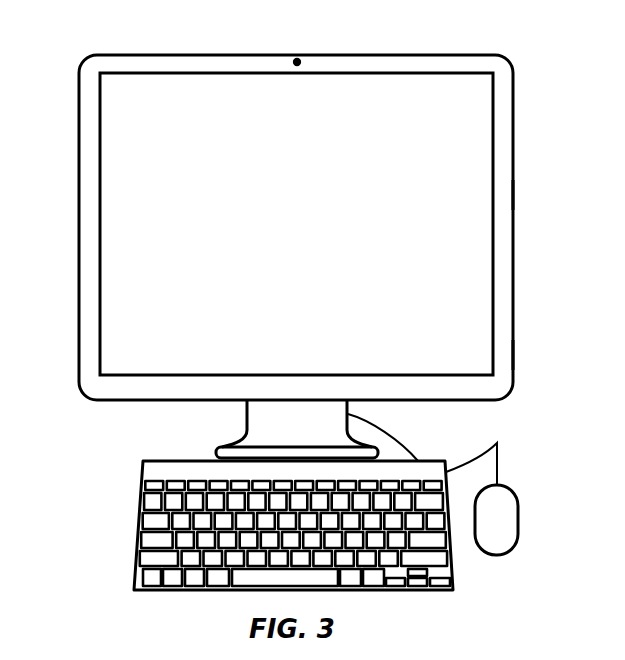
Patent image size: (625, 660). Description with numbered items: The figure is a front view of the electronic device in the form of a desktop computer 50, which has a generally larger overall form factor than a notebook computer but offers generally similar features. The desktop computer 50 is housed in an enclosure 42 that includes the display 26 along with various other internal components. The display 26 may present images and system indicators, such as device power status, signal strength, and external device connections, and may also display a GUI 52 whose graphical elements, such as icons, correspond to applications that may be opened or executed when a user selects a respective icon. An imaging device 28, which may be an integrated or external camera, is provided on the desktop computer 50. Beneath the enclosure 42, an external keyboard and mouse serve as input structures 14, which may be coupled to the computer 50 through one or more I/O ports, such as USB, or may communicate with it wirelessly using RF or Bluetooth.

The desktop computer 50 is at (322, 303).
The display 26 is at (301, 208).
The imaging device 28 is at (297, 60).
The enclosure 42 is at (515, 192).
The GUI 52 is at (123, 152).
The input structures 14 is at (139, 523).